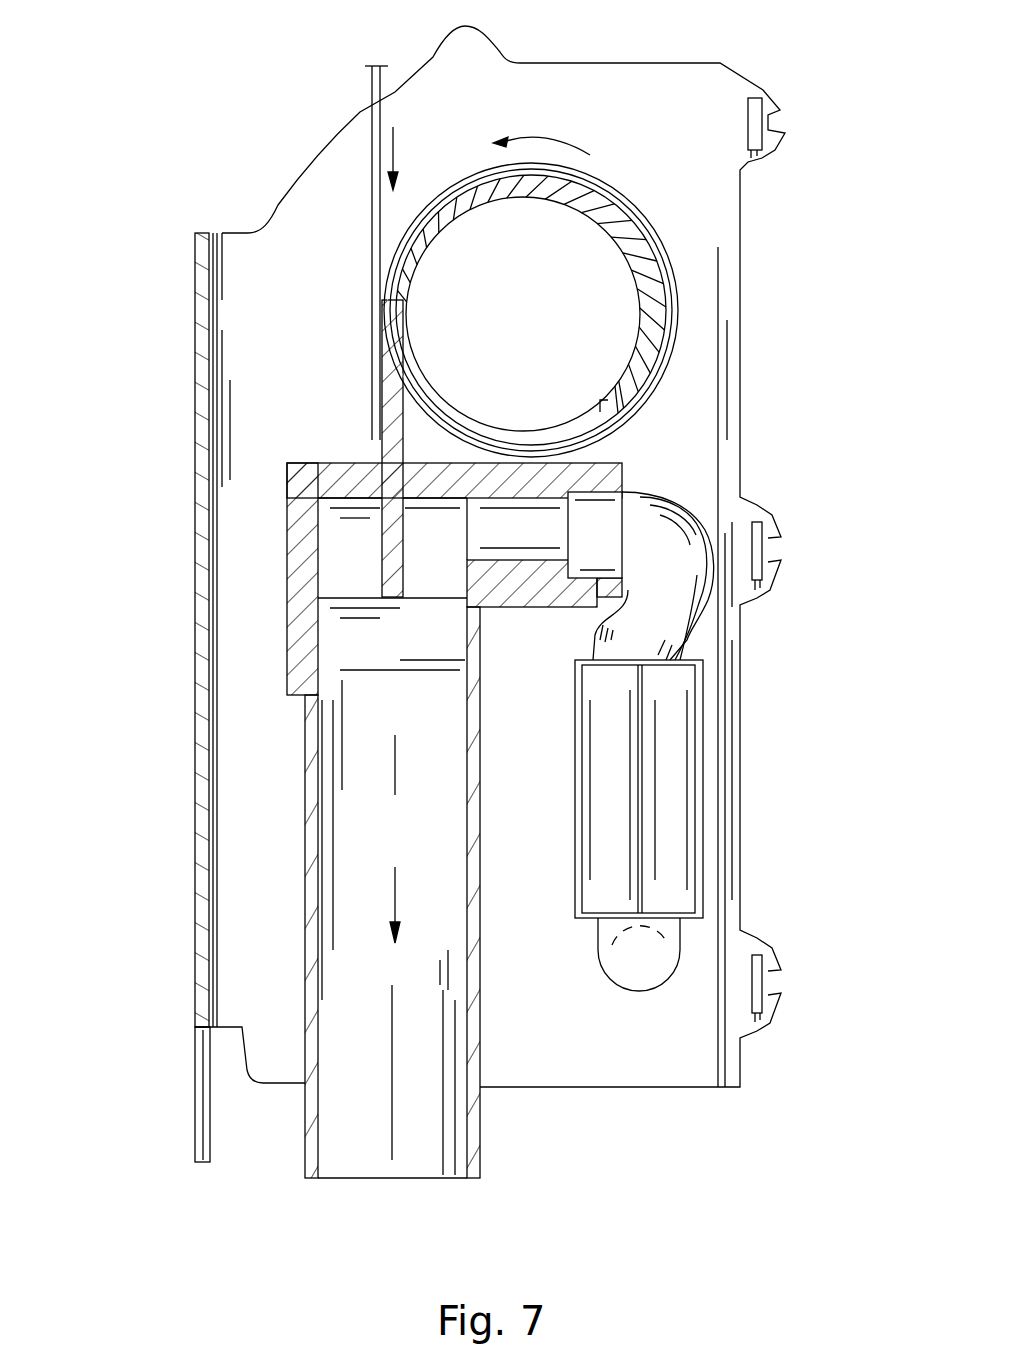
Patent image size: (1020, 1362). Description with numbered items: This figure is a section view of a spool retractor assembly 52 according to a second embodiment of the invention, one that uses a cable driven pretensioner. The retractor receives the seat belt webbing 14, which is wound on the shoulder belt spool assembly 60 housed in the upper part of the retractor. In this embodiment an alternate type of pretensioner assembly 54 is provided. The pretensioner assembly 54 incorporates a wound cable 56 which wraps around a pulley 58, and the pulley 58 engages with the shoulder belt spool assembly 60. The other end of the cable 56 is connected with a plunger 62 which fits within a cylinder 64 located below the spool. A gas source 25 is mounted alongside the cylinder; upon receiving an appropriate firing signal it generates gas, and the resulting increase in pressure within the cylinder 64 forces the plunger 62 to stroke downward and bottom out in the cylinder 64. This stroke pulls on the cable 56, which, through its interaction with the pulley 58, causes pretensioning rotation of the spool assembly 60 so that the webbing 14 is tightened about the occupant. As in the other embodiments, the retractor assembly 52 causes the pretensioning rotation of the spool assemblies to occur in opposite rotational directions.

The webbing 14 is at (372, 133).
The gas source 25 is at (663, 730).
The spool retractor assembly 52 is at (777, 177).
The pretensioner assembly 54 is at (674, 372).
The cable 56 is at (622, 422).
The pulley 58 is at (665, 318).
The shoulder belt spool assembly 60 is at (593, 185).
The plunger 62 is at (340, 642).
The cylinder 64 is at (213, 900).